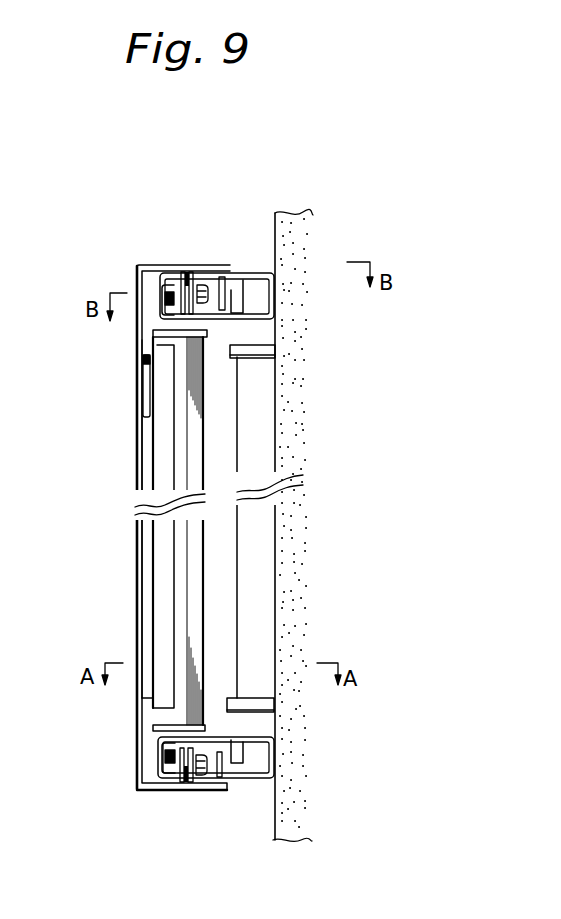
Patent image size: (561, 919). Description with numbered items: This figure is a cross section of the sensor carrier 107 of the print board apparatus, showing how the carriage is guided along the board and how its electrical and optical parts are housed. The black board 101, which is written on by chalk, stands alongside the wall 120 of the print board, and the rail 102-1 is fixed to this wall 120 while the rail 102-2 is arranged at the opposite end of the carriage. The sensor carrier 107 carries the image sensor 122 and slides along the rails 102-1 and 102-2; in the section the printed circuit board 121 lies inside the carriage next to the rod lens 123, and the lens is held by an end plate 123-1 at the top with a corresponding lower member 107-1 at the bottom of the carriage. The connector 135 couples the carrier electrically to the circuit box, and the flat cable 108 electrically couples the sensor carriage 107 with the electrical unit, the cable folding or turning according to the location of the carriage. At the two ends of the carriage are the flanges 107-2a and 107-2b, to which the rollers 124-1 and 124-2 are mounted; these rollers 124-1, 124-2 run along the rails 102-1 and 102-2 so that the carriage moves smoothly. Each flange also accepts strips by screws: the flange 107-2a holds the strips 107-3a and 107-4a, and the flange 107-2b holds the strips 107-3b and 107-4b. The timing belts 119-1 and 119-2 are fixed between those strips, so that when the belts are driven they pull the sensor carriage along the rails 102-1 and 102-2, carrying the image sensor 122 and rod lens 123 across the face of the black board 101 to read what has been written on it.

The black board 101 is at (268, 587).
The rail 102-1 is at (257, 323).
The rail 102-2 is at (262, 736).
The sensor carrier 107 is at (136, 635).
The lower frame plate 107-1 is at (147, 716).
The flange 107-2a is at (172, 274).
The flange 107-2b is at (173, 778).
The strip 107-3a is at (184, 273).
The strip 107-3b is at (187, 781).
The strip 107-4a is at (198, 273).
The strip 107-4b is at (207, 779).
The flat cable 108 is at (260, 306).
The timing belt 119-1 is at (190, 272).
The timing belt 119-2 is at (225, 770).
The wall 120 is at (298, 237).
The printed circuit board 121 is at (150, 598).
The image sensor 122 is at (163, 553).
The rod lens 123 is at (190, 468).
The upper plate 123-1 is at (158, 335).
The roller 124-1 is at (167, 300).
The roller 124-2 is at (165, 752).
The connector 135 is at (147, 416).